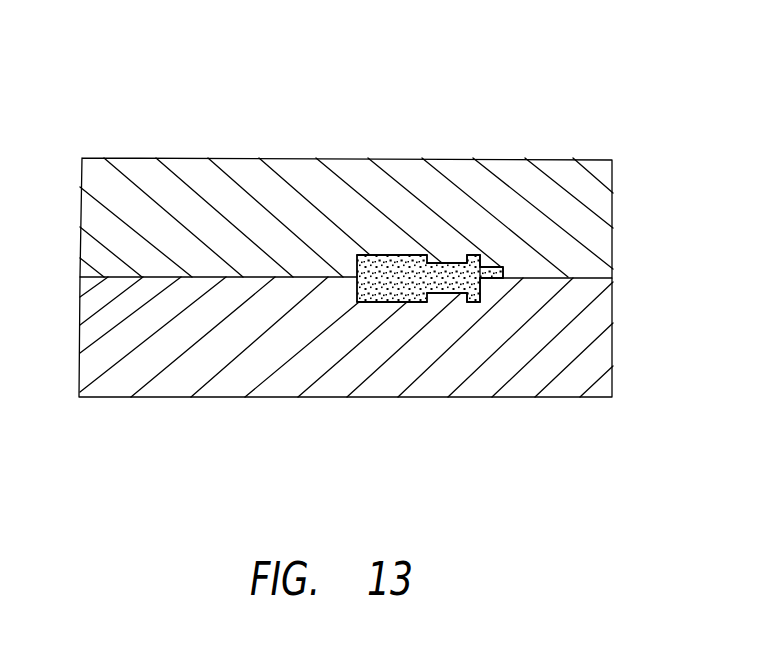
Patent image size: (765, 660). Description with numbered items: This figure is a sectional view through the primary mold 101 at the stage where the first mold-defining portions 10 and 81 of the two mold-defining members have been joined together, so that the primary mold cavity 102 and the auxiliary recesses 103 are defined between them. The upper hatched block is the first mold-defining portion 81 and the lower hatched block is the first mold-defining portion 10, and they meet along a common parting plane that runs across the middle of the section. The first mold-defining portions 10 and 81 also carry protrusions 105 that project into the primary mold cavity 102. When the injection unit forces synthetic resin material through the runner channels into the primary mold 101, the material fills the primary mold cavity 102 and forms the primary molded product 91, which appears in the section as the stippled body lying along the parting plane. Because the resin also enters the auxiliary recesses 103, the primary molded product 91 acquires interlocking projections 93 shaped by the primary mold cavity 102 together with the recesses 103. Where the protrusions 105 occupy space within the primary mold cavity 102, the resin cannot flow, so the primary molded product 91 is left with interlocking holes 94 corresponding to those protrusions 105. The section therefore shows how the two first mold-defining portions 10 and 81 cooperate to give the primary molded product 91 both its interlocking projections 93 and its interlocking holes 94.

The first mold-defining portion 81 is at (162, 157).
The first mold-defining portion 10 is at (157, 398).
The primary mold 101 is at (357, 253).
The primary mold cavity 102 is at (400, 253).
The interlocking hole 94 is at (433, 262).
The protrusion 105 is at (453, 263).
The auxiliary recess 103 is at (505, 268).
The primary molded product 91 is at (370, 302).
The interlocking projection 93 is at (500, 280).